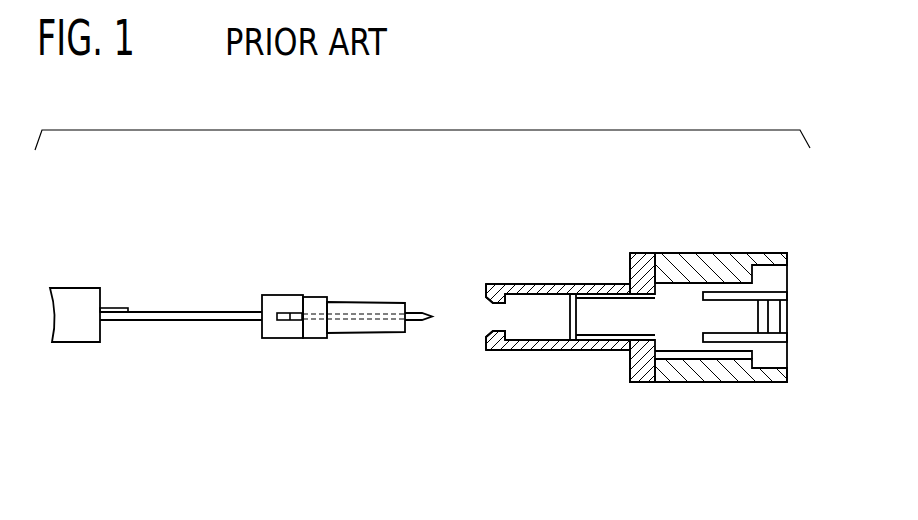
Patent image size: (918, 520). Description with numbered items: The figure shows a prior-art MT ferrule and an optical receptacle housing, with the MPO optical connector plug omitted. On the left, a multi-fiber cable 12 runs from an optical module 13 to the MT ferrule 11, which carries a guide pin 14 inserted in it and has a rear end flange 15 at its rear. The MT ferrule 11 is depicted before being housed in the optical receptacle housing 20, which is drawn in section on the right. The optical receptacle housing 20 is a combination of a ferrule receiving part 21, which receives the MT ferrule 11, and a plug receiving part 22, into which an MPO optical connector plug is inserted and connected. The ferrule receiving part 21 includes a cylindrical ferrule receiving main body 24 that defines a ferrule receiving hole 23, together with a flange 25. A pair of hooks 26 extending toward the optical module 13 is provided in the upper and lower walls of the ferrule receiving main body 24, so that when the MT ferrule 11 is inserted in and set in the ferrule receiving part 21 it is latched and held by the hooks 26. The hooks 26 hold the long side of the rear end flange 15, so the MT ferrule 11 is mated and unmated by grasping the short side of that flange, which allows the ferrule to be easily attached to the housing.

The MT ferrule 11 is at (358, 300).
The multi-fiber cable 12 is at (189, 312).
The optical module 13 is at (76, 288).
The guide pin 14 is at (420, 312).
The rear end flange 15 is at (315, 340).
The optical receptacle housing 20 is at (737, 388).
The ferrule receiving part 21 is at (549, 283).
The plug receiving part 22 is at (738, 248).
The ferrule receiving hole 23 is at (612, 297).
The ferrule receiving main body 24 is at (562, 355).
The flange 25 is at (639, 382).
The hooks 26 is at (503, 283).